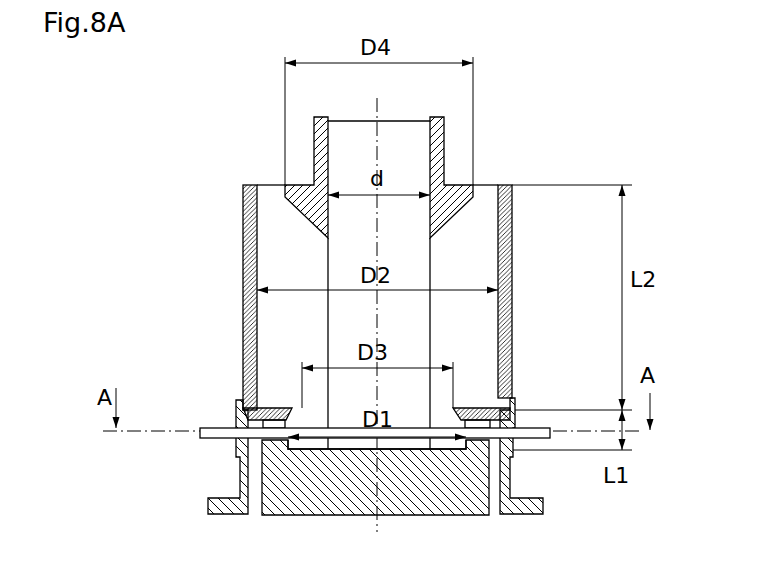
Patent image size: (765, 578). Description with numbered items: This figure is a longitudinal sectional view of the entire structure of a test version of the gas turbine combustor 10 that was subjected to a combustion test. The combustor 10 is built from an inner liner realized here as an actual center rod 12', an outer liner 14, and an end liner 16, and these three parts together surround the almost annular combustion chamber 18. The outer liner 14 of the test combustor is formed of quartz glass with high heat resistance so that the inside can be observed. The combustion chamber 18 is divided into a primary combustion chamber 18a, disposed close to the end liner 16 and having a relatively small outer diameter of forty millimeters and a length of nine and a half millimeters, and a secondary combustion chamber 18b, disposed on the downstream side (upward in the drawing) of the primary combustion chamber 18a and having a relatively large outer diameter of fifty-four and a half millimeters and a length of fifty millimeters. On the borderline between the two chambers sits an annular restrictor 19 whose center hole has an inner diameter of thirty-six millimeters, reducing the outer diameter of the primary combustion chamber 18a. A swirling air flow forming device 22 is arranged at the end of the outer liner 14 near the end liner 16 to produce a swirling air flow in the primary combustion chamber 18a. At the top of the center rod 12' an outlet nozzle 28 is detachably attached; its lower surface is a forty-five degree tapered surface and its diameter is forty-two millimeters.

The gas turbine combustor 10 is at (232, 242).
The center rod 12' is at (344, 262).
The outer liner 14 is at (248, 317).
The end liner 16 is at (308, 490).
The combustion chamber 18 is at (307, 267).
The primary combustion chamber 18a is at (442, 442).
The secondary combustion chamber 18b is at (467, 337).
The annular restrictor 19 is at (275, 407).
The swirling air flow forming device 22 is at (228, 418).
The outlet nozzle 28 is at (293, 192).